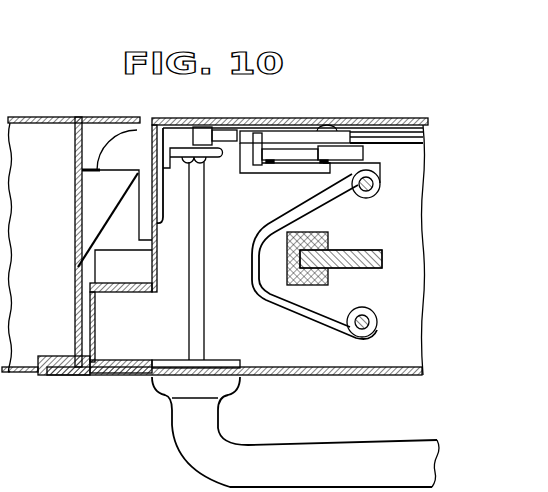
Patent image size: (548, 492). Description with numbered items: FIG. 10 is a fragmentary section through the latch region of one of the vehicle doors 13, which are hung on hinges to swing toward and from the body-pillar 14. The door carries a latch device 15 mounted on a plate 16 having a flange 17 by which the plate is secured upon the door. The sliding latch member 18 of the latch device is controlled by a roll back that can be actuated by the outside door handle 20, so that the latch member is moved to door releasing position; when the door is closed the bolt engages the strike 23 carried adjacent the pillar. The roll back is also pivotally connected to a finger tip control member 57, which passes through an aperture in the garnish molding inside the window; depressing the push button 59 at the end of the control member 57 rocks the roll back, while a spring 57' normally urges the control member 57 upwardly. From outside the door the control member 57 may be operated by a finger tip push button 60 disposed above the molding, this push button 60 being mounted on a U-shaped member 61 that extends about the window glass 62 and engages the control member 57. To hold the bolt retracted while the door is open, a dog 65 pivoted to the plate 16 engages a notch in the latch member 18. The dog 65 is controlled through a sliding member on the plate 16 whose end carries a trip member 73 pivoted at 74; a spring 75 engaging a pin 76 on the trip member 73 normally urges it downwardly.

The door 13 is at (343, 367).
The body-pillar 14 is at (62, 129).
The latch device 15 is at (372, 122).
The plate 16 is at (406, 123).
The flange 17 is at (165, 188).
The sliding latch member 18 is at (222, 162).
The outside door handle 20 is at (283, 450).
The strike 23 is at (102, 185).
The finger tip control member 57 is at (290, 175).
The spring 57' is at (295, 120).
The push button 59 is at (366, 198).
The finger tip push button 60 is at (369, 309).
The U-shaped member 61 is at (260, 238).
The window glass 62 is at (368, 250).
The dog 65 is at (198, 132).
The trip member 73 is at (220, 131).
The pivot 74 is at (318, 174).
The spring 75 is at (364, 154).
The pin 76 is at (258, 166).